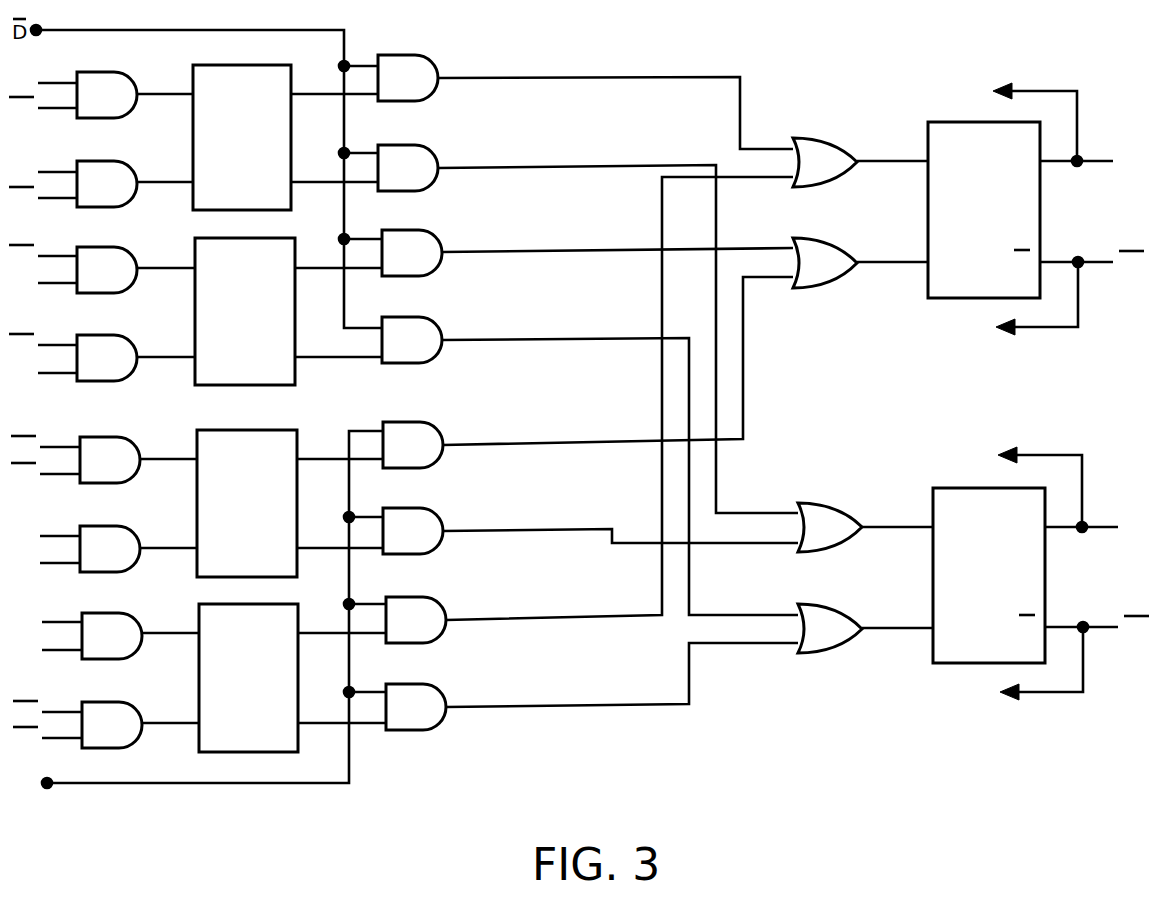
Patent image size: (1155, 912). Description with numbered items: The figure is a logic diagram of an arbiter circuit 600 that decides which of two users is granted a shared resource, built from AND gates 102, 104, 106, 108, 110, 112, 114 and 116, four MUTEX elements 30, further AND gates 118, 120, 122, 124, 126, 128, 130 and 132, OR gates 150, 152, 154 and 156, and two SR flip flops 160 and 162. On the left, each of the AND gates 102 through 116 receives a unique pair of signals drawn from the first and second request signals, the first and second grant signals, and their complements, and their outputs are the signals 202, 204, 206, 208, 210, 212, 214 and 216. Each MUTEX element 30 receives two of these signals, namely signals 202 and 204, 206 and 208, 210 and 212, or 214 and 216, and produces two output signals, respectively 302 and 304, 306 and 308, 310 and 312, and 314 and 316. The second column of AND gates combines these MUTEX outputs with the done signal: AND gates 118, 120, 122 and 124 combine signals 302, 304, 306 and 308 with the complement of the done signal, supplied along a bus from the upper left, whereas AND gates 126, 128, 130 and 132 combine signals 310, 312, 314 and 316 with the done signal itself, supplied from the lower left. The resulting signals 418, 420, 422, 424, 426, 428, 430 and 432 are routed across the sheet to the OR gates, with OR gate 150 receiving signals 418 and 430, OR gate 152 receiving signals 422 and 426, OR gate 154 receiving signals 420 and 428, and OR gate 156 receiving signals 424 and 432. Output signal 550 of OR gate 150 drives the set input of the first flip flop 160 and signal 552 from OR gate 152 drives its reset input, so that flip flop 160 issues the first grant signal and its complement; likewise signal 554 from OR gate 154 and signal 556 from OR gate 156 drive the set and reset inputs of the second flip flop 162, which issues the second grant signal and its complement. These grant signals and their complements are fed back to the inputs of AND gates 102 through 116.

The AND gate 102 is at (123, 109).
The AND gate 104 is at (123, 198).
The AND gate 106 is at (123, 284).
The AND gate 108 is at (123, 372).
The AND gate 110 is at (126, 474).
The AND gate 112 is at (126, 563).
The AND gate 114 is at (128, 650).
The AND gate 116 is at (128, 739).
The AND gate 118 is at (424, 92).
The AND gate 120 is at (424, 182).
The AND gate 122 is at (428, 267).
The AND gate 124 is at (428, 354).
The AND gate 126 is at (429, 459).
The AND gate 128 is at (429, 545).
The AND gate 130 is at (432, 634).
The AND gate 132 is at (432, 721).
The MUTEX element 30 is at (250, 162).
The OR gate 150 is at (843, 175).
The OR gate 152 is at (843, 276).
The OR gate 154 is at (848, 541).
The OR gate 156 is at (848, 642).
The first flip flop 160 is at (960, 121).
The second flip flop 162 is at (965, 485).
The output signal 202 is at (152, 89).
The output signal 204 is at (152, 177).
The output signal 206 is at (154, 263).
The output signal 208 is at (154, 352).
The output signal 210 is at (156, 455).
The output signal 212 is at (156, 544).
The output signal 214 is at (158, 629).
The output signal 216 is at (158, 719).
The output signal 302 is at (304, 89).
The output signal 304 is at (304, 177).
The output signal 306 is at (306, 263).
The output signal 308 is at (306, 352).
The output signal 310 is at (308, 455).
The output signal 312 is at (308, 544).
The output signal 314 is at (310, 629).
The output signal 316 is at (310, 719).
The output signal 418 is at (549, 71).
The output signal 420 is at (549, 161).
The output signal 422 is at (552, 248).
The output signal 424 is at (552, 332).
The output signal 426 is at (554, 432).
The output signal 428 is at (554, 520).
The output signal 430 is at (556, 610).
The output signal 432 is at (556, 700).
The output signal 550 is at (881, 154).
The output signal 552 is at (881, 254).
The output signal 554 is at (886, 519).
The output signal 556 is at (886, 619).
The arbiter circuit 600 is at (222, 798).